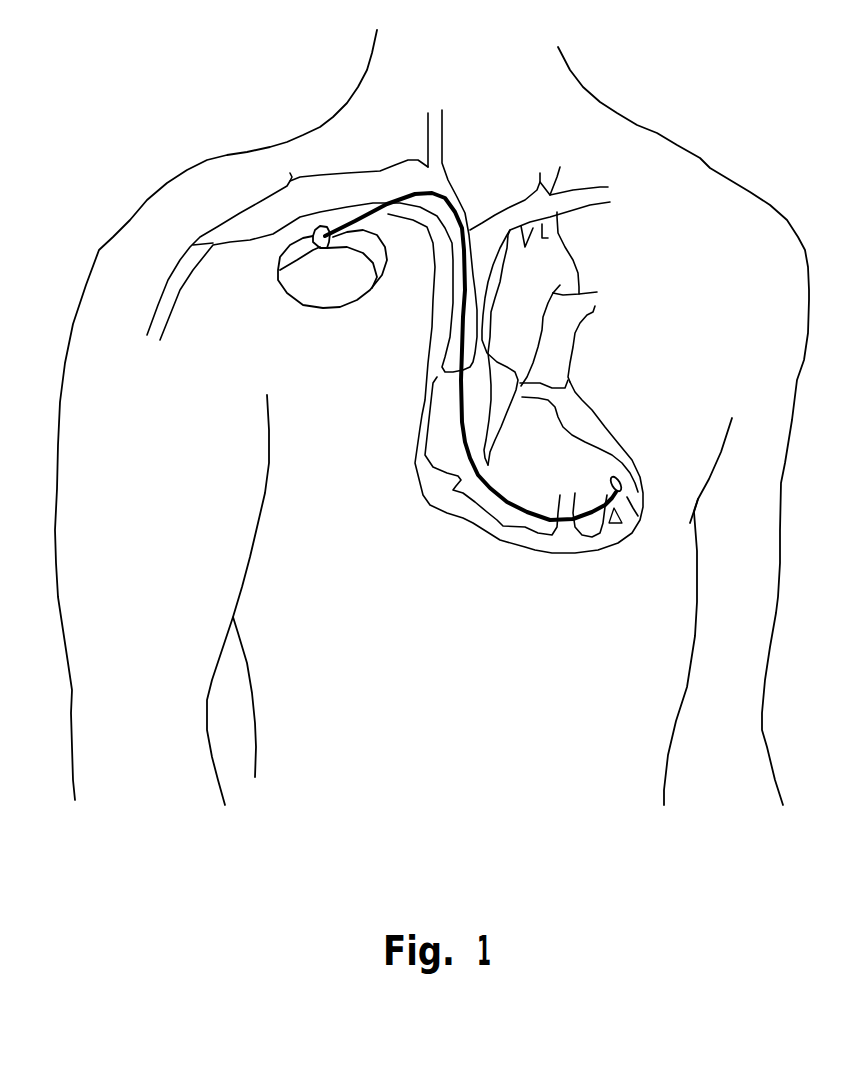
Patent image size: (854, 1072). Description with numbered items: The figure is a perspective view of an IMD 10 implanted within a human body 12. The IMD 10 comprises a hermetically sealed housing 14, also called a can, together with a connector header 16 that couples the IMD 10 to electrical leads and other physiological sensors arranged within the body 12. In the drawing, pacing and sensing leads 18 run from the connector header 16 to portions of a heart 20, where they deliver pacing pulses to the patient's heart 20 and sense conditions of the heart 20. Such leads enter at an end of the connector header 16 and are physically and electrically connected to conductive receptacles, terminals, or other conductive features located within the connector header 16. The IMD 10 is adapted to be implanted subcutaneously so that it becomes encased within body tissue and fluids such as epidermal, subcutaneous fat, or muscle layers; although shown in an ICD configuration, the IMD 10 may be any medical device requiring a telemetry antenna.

The IMD 10 is at (302, 326).
The human body 12 is at (675, 100).
The hermetically sealed housing 14 is at (343, 287).
The connector header 16 is at (303, 248).
The pacing and sensing leads 18 is at (458, 320).
The heart 20 is at (533, 552).